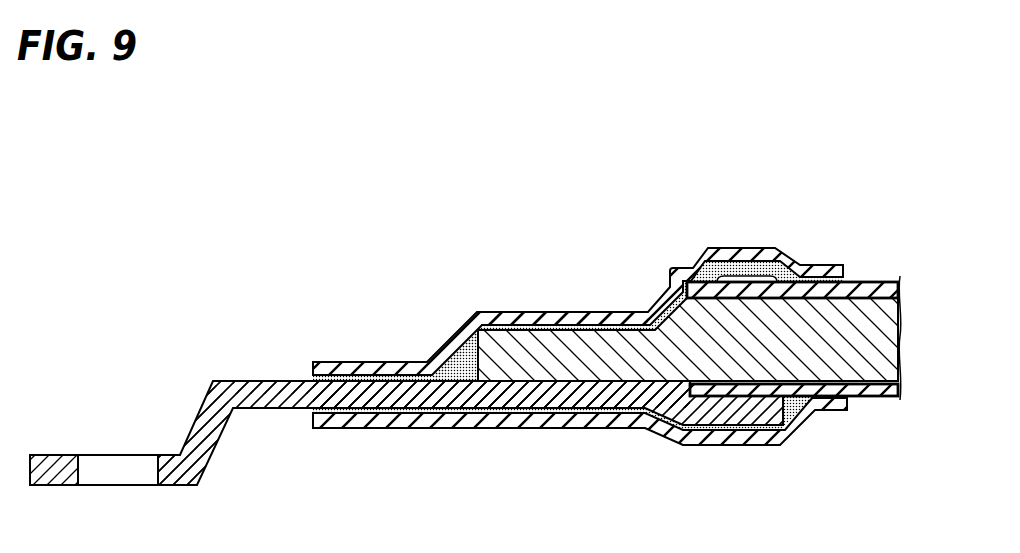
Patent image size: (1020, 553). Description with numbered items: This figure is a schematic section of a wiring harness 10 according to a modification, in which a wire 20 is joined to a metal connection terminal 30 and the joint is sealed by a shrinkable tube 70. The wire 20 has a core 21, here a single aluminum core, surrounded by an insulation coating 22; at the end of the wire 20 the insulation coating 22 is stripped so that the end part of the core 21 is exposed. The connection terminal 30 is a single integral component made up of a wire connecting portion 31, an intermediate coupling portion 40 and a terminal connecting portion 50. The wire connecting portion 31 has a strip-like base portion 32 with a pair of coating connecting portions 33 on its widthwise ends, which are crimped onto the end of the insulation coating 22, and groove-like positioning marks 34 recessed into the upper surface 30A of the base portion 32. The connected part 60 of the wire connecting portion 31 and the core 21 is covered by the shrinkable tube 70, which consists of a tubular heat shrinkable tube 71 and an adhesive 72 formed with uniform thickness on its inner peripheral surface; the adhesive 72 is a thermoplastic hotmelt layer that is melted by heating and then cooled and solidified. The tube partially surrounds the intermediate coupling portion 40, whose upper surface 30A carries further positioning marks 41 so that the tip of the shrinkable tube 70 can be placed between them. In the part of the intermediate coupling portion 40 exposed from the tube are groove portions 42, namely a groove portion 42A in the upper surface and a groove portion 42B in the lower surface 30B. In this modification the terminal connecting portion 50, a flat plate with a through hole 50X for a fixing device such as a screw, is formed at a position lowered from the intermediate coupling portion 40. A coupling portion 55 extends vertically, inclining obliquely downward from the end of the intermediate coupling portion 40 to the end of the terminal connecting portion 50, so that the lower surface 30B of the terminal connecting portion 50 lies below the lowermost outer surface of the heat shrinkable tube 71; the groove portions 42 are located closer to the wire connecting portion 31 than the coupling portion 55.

The wiring harness 10 is at (152, 220).
The wire 20 is at (900, 468).
The core 21 is at (860, 375).
The insulation coating 22 is at (883, 396).
The connection terminal 30 is at (49, 445).
The upper surface 30A is at (363, 363).
The lower surface 30B is at (433, 423).
The wire connecting portion 31 is at (501, 401).
The base portion 32 is at (600, 395).
The coating connecting portion 33 is at (747, 277).
The positioning mark 34 is at (493, 383).
The intermediate coupling portion 40 is at (367, 395).
The positioning mark 41 is at (283, 382).
The groove portion 42 is at (259, 353).
The groove portion 42A is at (195, 433).
The groove portion 42B is at (508, 403).
The terminal connecting portion 50 is at (60, 477).
The through hole 50X is at (86, 470).
The coupling portion 55 is at (203, 437).
The connected part 60 is at (522, 323).
The shrinkable tube 70 is at (472, 291).
The heat shrinkable tube 71 is at (440, 340).
The adhesive 72 is at (446, 335).